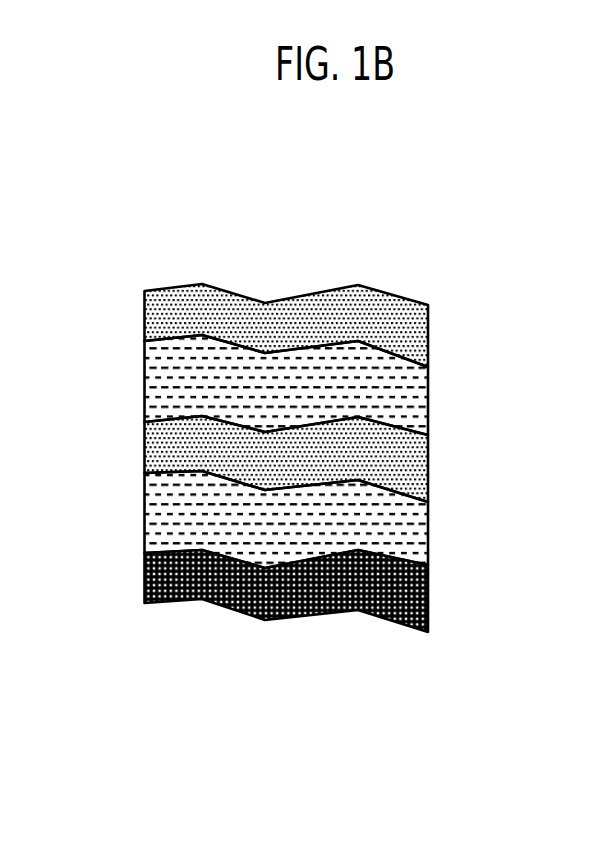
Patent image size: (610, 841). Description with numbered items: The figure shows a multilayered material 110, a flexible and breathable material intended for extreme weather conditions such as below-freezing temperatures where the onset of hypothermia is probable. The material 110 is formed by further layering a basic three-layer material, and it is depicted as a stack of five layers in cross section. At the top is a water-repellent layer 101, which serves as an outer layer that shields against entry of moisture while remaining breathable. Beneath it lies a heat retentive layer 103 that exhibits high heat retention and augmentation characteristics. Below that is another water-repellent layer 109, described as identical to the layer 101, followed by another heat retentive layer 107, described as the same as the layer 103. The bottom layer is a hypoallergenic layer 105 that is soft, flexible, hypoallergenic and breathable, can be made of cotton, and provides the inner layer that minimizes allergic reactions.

The water-repellent layer 101 is at (428, 332).
The heat retentive layer 103 is at (428, 402).
The hypoallergenic layer 105 is at (428, 605).
The heat retentive layer 107 is at (428, 552).
The water-repellent layer 109 is at (428, 477).
The material 110 is at (360, 548).